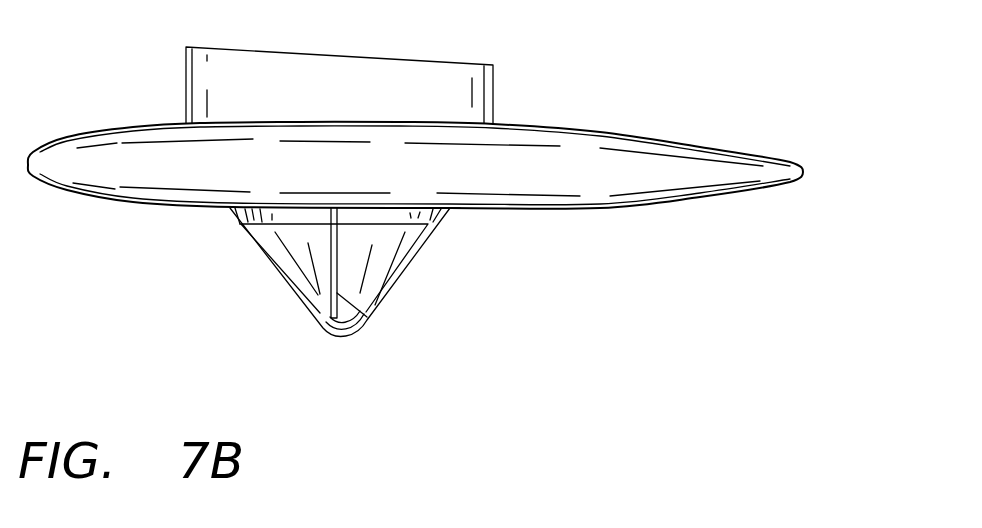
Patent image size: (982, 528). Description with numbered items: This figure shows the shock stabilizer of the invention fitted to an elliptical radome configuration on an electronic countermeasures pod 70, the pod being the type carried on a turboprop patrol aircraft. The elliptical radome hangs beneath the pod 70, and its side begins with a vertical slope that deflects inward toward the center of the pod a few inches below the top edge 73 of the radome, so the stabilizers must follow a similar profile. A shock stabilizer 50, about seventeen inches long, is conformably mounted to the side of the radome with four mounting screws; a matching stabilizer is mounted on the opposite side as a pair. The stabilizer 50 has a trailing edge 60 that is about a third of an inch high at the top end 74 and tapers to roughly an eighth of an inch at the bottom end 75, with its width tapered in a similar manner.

The AN/ALQ-78 pod 70 is at (582, 168).
The top end 74 is at (333, 207).
The trailing edge 60 is at (337, 235).
The bottom end 75 is at (327, 327).
The shock stabilizer 50 is at (345, 300).
The top edge 73 is at (390, 210).